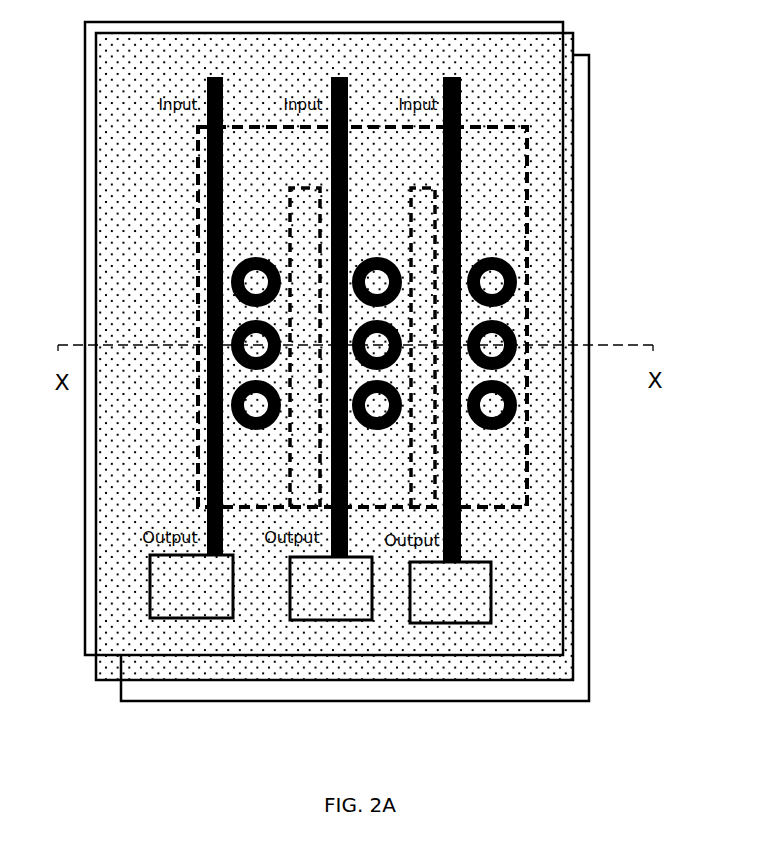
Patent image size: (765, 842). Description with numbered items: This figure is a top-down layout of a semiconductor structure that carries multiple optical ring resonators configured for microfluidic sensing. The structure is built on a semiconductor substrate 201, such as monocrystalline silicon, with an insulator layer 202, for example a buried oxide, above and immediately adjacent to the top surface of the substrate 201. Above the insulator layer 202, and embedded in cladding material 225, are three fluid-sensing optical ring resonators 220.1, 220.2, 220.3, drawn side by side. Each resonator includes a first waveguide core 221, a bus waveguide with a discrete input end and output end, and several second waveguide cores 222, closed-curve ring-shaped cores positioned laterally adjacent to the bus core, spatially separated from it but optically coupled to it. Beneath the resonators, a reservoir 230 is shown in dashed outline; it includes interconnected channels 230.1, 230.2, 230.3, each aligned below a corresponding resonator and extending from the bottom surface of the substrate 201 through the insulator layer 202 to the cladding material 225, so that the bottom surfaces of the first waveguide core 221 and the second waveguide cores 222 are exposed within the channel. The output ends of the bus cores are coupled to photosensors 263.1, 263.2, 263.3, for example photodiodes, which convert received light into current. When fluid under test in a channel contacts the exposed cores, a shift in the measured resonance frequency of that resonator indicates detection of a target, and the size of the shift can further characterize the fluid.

The semiconductor substrate 201 is at (590, 143).
The insulator layer 202 is at (573, 104).
The cladding material 225 is at (562, 67).
The reservoir 230 is at (362, 125).
The channel 230.1 is at (560, 319).
The channel 230.2 is at (413, 265).
The channel 230.3 is at (198, 428).
The first waveguide core 221 is at (462, 317).
The second waveguide core 222 is at (515, 335).
The fluid-sensing optical ring resonator 220.1 is at (488, 460).
The fluid-sensing optical ring resonator 220.2 is at (372, 464).
The fluid-sensing optical ring resonator 220.3 is at (245, 464).
The photosensor 263.1 is at (450, 592).
The photosensor 263.2 is at (331, 588).
The photosensor 263.3 is at (191, 586).